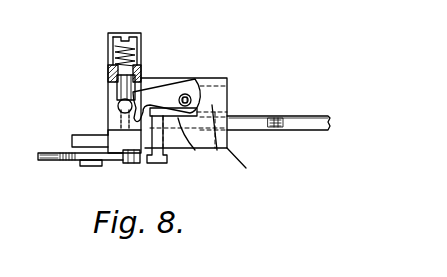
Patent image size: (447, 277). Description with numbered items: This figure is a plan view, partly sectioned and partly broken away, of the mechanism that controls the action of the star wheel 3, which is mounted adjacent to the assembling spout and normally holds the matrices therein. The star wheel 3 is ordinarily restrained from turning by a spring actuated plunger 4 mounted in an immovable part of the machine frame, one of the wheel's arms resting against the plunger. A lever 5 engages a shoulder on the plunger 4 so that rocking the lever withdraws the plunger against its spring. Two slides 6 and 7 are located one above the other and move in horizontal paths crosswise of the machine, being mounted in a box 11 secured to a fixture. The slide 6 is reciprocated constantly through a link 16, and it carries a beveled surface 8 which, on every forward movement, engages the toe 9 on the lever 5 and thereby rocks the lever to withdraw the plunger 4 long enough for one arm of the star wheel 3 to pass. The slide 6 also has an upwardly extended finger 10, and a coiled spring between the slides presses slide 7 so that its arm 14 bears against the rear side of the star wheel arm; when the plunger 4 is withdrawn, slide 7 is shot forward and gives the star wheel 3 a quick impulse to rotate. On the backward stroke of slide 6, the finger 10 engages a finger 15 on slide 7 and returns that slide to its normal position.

The star wheel 3 is at (69, 160).
The spring actuated plunger 4 is at (124, 164).
The lever 5 is at (184, 96).
The slide 6 is at (264, 131).
The slide 7 is at (189, 146).
The beveled surface 8 is at (122, 114).
The toe 9 is at (127, 122).
The finger 10 is at (222, 142).
The box 11 is at (244, 167).
The arm 14 is at (161, 164).
The finger 15 is at (231, 117).
The link 16 is at (319, 131).